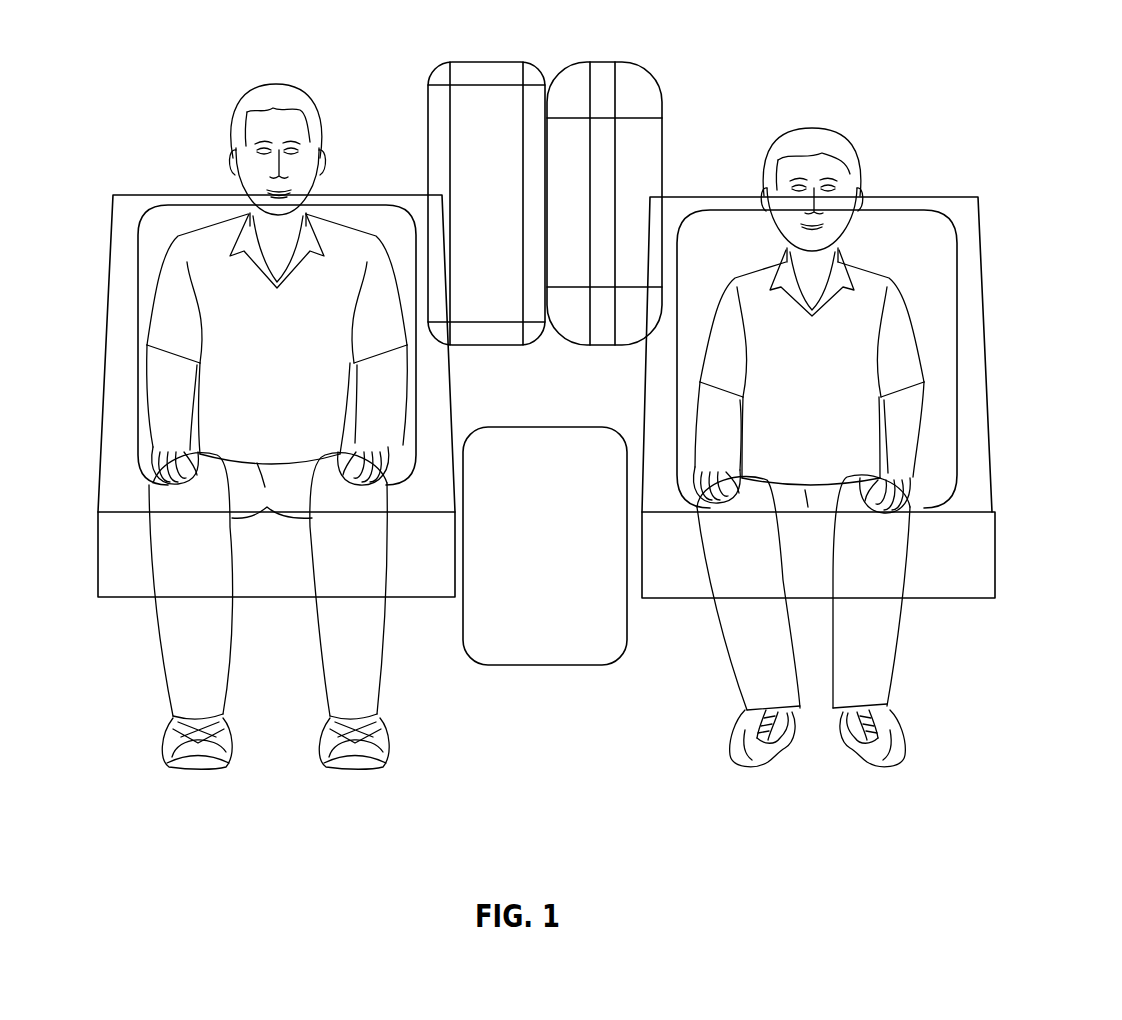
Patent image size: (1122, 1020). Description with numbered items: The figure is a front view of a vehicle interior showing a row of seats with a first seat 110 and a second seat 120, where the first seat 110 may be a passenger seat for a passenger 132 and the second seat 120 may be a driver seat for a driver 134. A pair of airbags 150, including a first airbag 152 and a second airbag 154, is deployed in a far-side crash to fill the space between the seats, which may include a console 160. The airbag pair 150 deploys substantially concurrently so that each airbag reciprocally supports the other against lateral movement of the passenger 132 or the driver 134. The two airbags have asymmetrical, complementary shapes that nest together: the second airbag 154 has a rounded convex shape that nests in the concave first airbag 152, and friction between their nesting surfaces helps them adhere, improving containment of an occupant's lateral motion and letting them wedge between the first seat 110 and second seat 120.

The first seat 110 is at (190, 195).
The second seat 120 is at (983, 317).
The passenger 132 is at (265, 82).
The driver 134 is at (810, 128).
The pair of airbags 150 is at (587, 184).
The first airbag 152 is at (490, 60).
The second airbag 154 is at (662, 131).
The console 160 is at (545, 427).